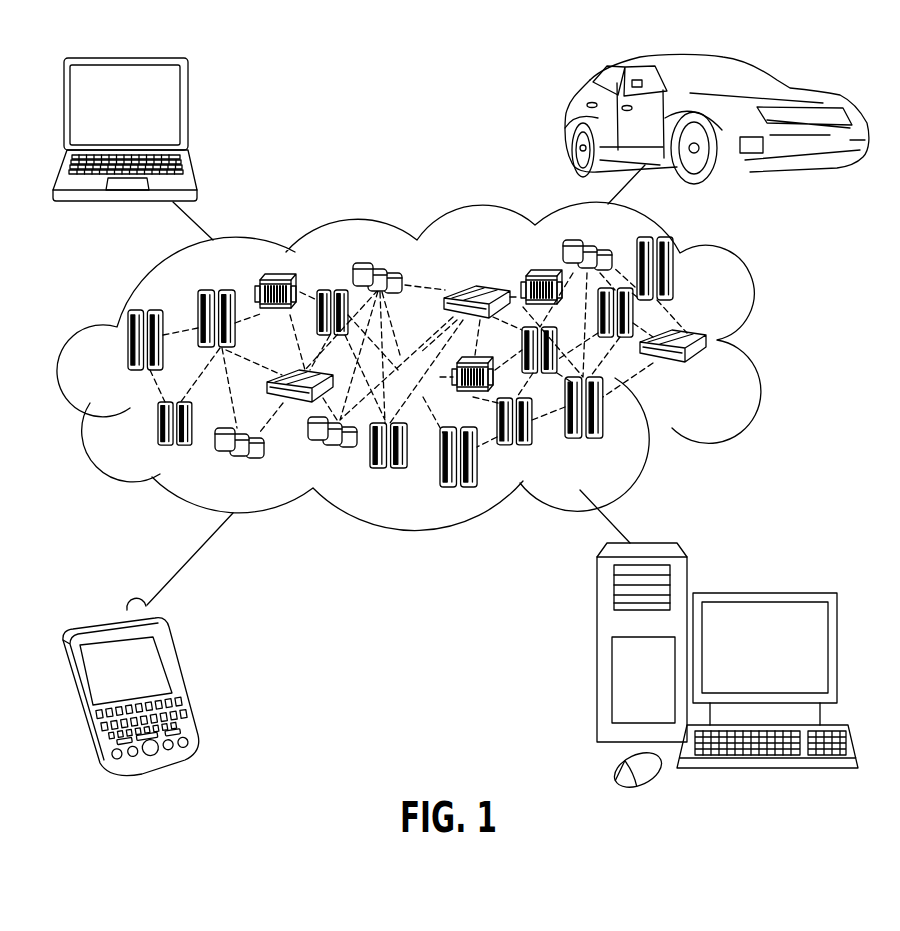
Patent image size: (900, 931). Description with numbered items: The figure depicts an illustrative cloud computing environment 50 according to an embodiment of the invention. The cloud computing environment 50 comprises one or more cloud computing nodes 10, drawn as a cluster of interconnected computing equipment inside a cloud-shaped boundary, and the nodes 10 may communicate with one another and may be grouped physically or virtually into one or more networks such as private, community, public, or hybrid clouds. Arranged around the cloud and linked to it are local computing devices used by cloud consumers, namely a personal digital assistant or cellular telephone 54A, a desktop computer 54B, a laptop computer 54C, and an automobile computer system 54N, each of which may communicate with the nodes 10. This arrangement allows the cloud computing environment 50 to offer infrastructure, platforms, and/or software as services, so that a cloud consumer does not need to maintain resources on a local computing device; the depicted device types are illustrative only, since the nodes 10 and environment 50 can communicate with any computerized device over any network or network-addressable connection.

The cloud computing environment 50 is at (434, 366).
The cloud computing node 10 is at (720, 366).
The personal digital assistant or cellular telephone 54A is at (183, 682).
The desktop computer 54B is at (762, 593).
The laptop computer 54C is at (186, 112).
The automobile computer system 54N is at (567, 120).